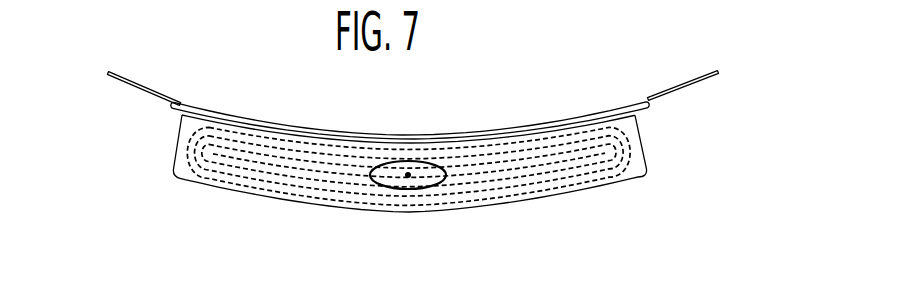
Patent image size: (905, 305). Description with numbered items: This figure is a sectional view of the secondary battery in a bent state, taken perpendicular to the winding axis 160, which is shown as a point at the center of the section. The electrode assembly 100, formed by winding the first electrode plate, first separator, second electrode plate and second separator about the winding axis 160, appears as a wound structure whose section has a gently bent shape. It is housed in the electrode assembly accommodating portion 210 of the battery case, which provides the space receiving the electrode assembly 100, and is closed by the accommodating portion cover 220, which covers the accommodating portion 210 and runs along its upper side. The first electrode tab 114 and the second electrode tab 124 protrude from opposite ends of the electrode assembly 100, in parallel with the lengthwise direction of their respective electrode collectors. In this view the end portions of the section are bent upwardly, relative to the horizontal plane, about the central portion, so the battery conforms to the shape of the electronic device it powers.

The electrode assembly 100 is at (214, 183).
The first electrode tab 114 is at (112, 80).
The second electrode tab 124 is at (703, 80).
The winding axis 160 is at (404, 165).
The electrode assembly accommodating portion 210 is at (503, 205).
The accommodating portion cover 220 is at (438, 136).